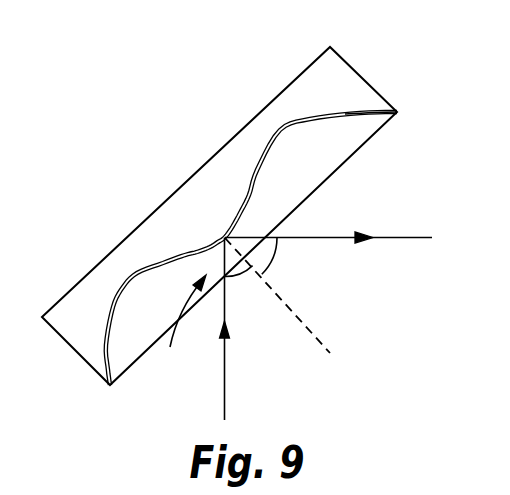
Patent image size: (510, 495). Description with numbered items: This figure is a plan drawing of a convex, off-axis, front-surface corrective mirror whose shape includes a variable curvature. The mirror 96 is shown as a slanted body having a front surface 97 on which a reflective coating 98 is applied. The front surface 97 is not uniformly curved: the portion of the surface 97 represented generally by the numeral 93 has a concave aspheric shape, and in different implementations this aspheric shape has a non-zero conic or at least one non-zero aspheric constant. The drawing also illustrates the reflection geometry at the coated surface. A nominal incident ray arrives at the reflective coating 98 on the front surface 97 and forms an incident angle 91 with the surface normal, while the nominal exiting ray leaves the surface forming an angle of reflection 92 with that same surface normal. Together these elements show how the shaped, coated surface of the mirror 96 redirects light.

The incident angle 91 is at (238, 276).
The angle of reflection 92 is at (274, 256).
The concave aspheric portion of the surface 93 is at (179, 326).
The mirror 96 is at (222, 170).
The front surface 97 is at (348, 115).
The reflective coating 98 is at (262, 168).